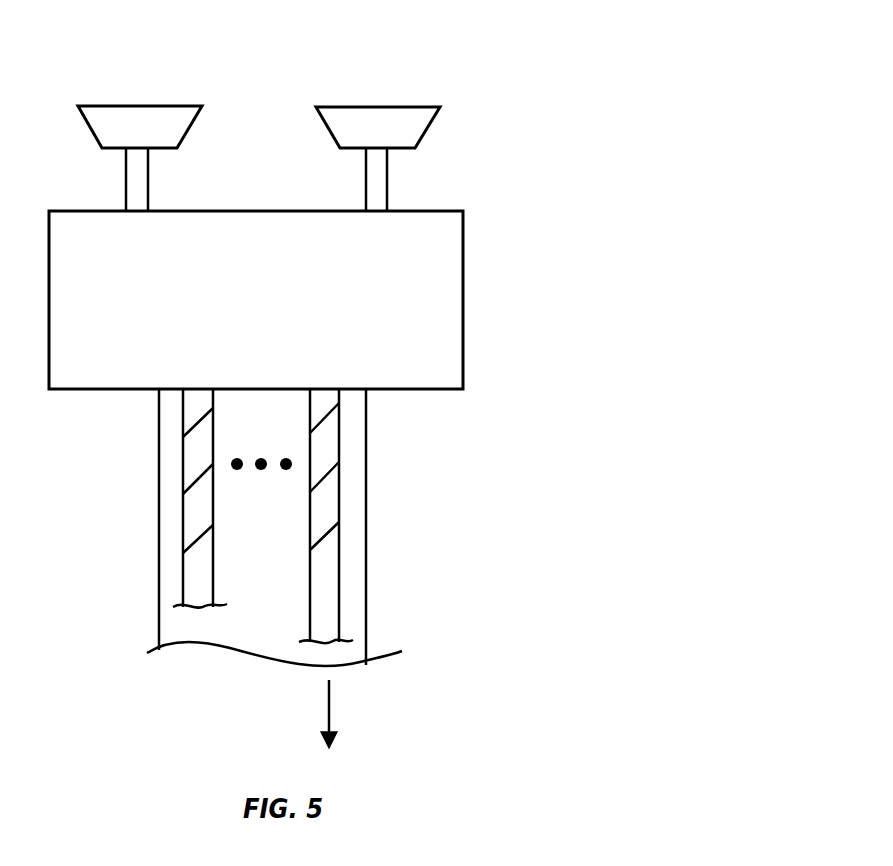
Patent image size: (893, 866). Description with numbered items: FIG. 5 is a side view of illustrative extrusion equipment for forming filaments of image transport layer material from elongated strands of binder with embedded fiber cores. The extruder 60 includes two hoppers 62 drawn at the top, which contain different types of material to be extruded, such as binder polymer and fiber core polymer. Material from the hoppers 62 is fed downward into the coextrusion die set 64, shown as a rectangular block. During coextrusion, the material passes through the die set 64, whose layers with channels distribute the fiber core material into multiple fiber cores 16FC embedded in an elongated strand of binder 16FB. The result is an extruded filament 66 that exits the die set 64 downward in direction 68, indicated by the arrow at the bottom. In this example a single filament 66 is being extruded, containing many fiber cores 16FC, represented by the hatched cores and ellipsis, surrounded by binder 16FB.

The extruder 60 is at (509, 74).
The hoppers 62 is at (134, 118).
The coextrusion die set 64 is at (446, 300).
The extruded filament 66 is at (366, 505).
The fiber cores 16FC is at (195, 517).
The binder 16FB is at (175, 627).
The direction 68 is at (329, 707).